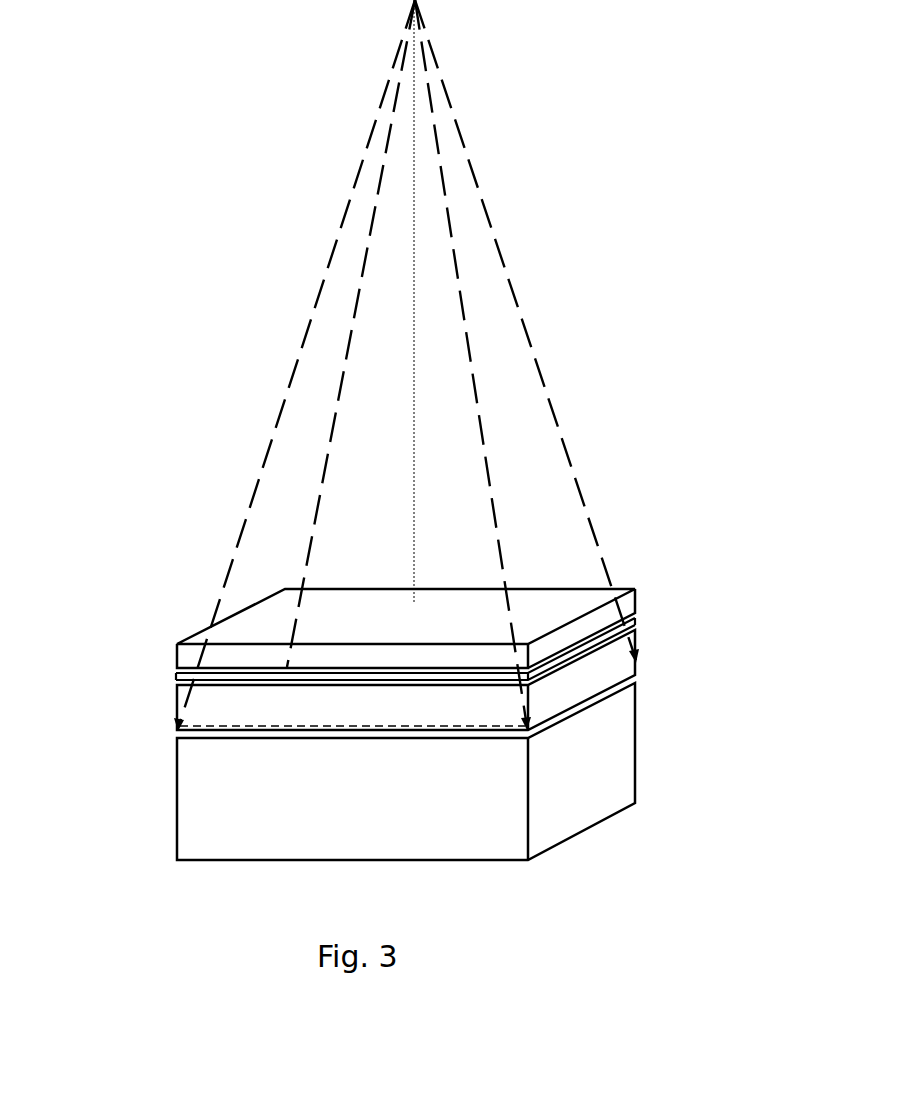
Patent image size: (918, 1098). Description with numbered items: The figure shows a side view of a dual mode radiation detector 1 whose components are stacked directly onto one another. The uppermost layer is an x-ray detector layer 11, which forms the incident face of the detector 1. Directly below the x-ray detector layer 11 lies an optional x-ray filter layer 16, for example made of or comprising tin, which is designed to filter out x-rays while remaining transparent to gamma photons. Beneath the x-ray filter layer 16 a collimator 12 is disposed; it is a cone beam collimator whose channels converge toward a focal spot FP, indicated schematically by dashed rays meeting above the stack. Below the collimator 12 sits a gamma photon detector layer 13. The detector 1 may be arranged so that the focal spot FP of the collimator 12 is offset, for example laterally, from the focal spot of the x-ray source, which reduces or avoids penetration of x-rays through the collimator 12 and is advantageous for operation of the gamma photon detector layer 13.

The dual mode radiation detector 1 is at (108, 583).
The x-ray detector layer 11 is at (605, 608).
The x-ray filter layer 16 is at (633, 625).
The collimator 12 is at (570, 670).
The gamma photon detector layer 13 is at (608, 738).
The focal spot FP is at (425, 3).